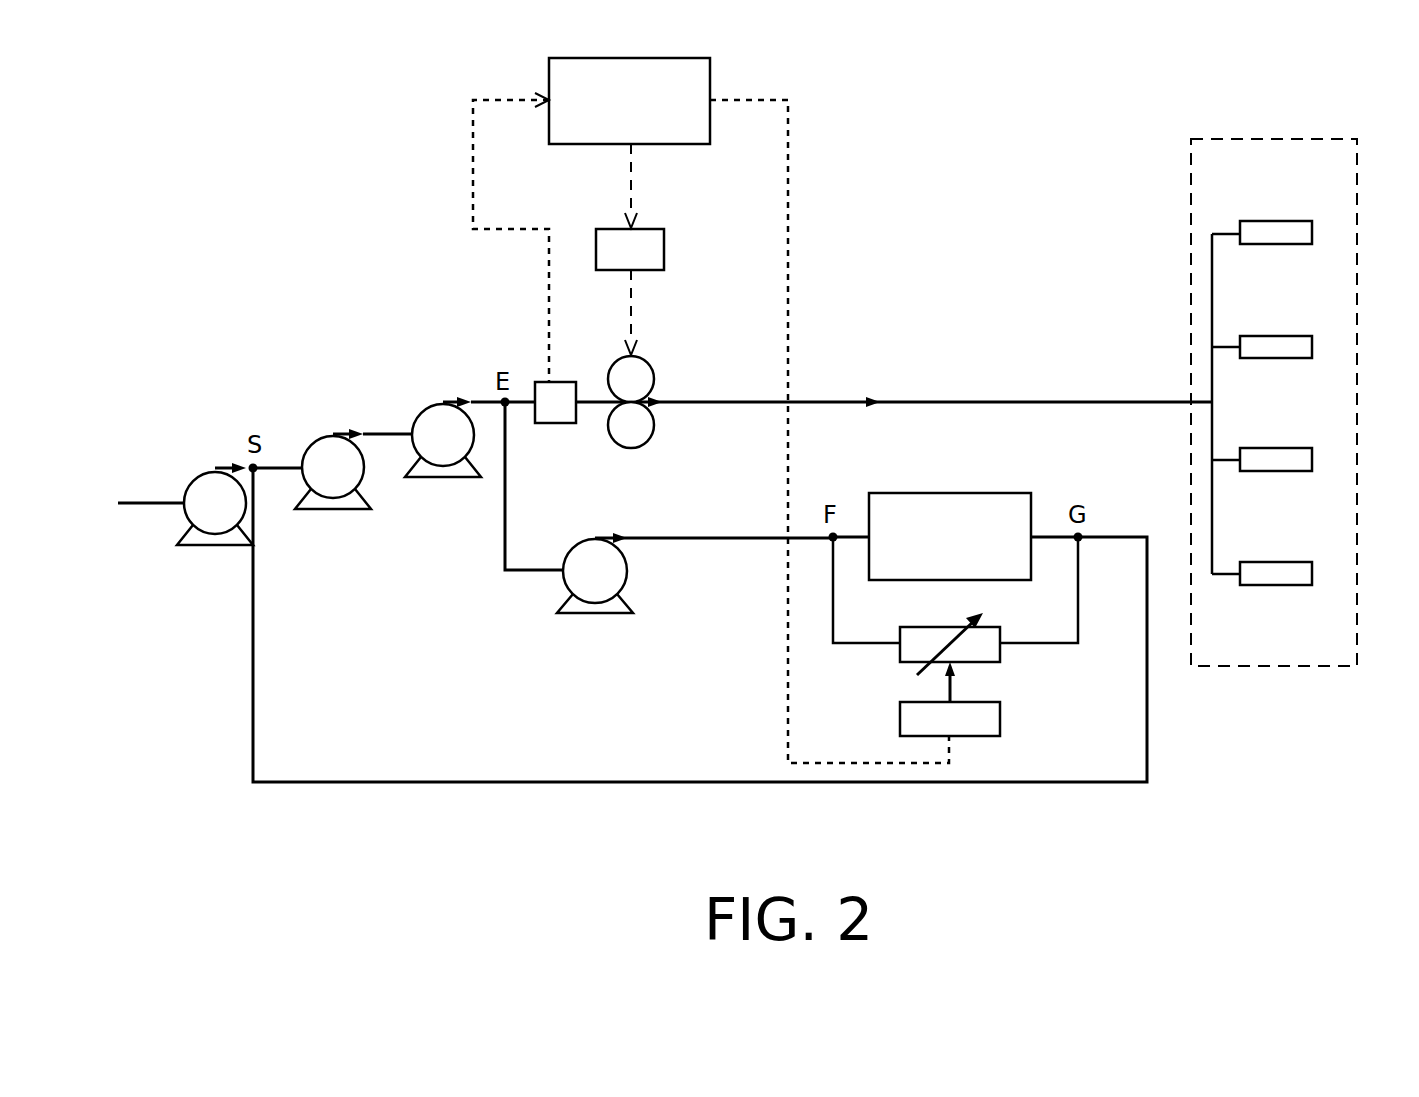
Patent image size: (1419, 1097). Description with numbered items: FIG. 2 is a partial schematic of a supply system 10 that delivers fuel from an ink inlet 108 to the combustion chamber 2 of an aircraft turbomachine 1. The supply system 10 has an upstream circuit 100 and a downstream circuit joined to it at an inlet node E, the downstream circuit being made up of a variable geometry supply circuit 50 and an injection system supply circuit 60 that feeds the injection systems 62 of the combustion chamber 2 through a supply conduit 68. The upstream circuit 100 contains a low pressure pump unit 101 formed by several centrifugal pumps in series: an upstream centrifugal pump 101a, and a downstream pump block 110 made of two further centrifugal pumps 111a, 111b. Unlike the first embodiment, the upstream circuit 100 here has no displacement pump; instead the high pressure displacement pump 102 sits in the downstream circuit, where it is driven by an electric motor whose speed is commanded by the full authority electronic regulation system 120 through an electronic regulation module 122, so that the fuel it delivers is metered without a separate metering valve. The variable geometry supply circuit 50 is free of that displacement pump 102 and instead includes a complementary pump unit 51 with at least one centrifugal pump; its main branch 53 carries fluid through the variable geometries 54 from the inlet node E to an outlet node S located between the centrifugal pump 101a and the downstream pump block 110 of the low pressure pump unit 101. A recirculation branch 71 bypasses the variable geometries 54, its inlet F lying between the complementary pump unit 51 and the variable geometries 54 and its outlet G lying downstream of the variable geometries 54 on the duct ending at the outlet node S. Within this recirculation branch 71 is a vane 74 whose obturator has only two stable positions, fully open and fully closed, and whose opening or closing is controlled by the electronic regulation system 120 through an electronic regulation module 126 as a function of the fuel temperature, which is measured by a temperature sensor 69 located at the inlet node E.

The turbomachine 1 is at (1030, 840).
The combustion chamber 2 is at (1355, 605).
The supply system 10 is at (802, 305).
The variable geometry supply circuit 50 is at (577, 788).
The complementary pump unit 51 is at (607, 610).
The main branch 53 is at (1047, 535).
The variable geometries 54 is at (985, 567).
The injection system supply circuit 60 is at (836, 393).
The injection systems 62 is at (1279, 235).
The supply conduit 68 is at (1085, 402).
The temperature sensor 69 is at (562, 390).
The recirculation branch 71 is at (1080, 567).
The vane 74 is at (993, 650).
The upstream circuit 100 is at (138, 468).
The low pressure pump unit 101 is at (311, 406).
The centrifugal pump 101a is at (213, 522).
The high pressure displacement pump 102 is at (630, 428).
The ink inlet 108 is at (155, 507).
The downstream pump block 110 is at (383, 553).
The centrifugal pump 111a is at (313, 503).
The centrifugal pump 111b is at (458, 472).
The electronic regulation system 120 is at (665, 131).
The electronic regulation module 122 is at (650, 258).
The electronic regulation module 126 is at (993, 717).